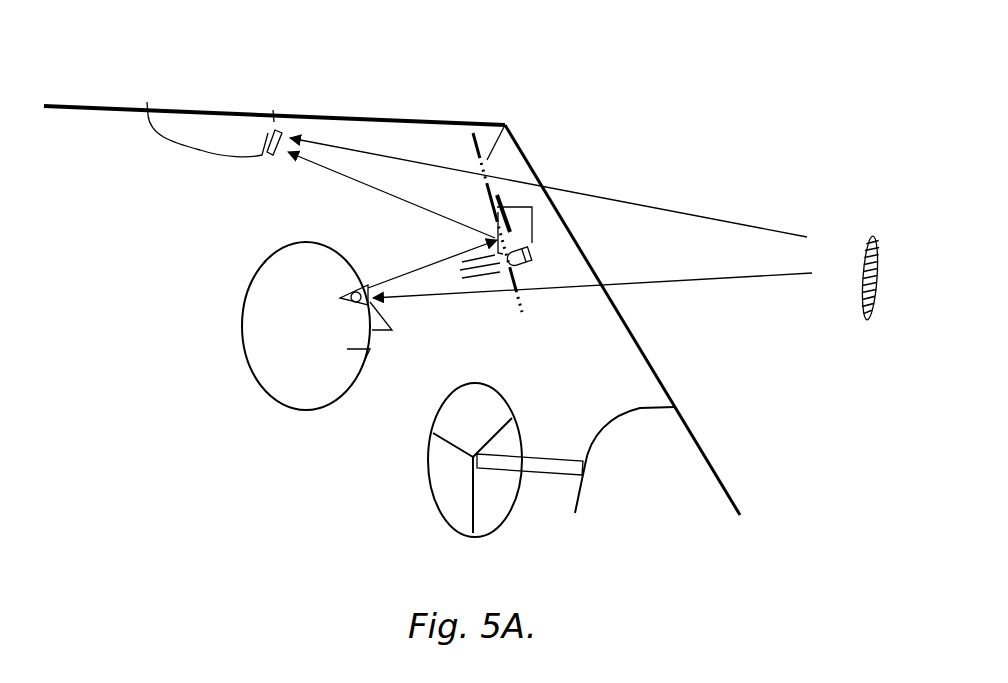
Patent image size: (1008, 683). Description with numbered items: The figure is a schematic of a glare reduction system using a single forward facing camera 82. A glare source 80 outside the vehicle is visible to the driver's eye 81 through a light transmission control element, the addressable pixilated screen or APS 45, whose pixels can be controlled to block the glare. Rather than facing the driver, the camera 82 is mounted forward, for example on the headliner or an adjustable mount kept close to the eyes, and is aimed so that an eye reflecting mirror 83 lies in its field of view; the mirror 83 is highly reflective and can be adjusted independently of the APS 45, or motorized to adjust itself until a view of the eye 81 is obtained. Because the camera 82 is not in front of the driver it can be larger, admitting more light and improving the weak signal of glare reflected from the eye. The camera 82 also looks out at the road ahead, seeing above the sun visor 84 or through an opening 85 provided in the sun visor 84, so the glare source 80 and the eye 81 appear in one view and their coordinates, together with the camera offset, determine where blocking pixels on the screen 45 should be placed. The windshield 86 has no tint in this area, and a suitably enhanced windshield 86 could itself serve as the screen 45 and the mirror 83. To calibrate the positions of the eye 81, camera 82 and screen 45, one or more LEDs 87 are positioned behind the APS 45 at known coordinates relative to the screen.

The glare source 80 is at (865, 240).
The driver's eye 81 is at (370, 303).
The camera 82 is at (227, 125).
The eye reflecting mirror 83 is at (495, 225).
The sun visor 84 is at (473, 134).
The opening 85 is at (505, 125).
The windshield 86 is at (660, 382).
The LEDs 87 is at (535, 247).
The APS (addressable pixilated screen) 45 is at (520, 303).